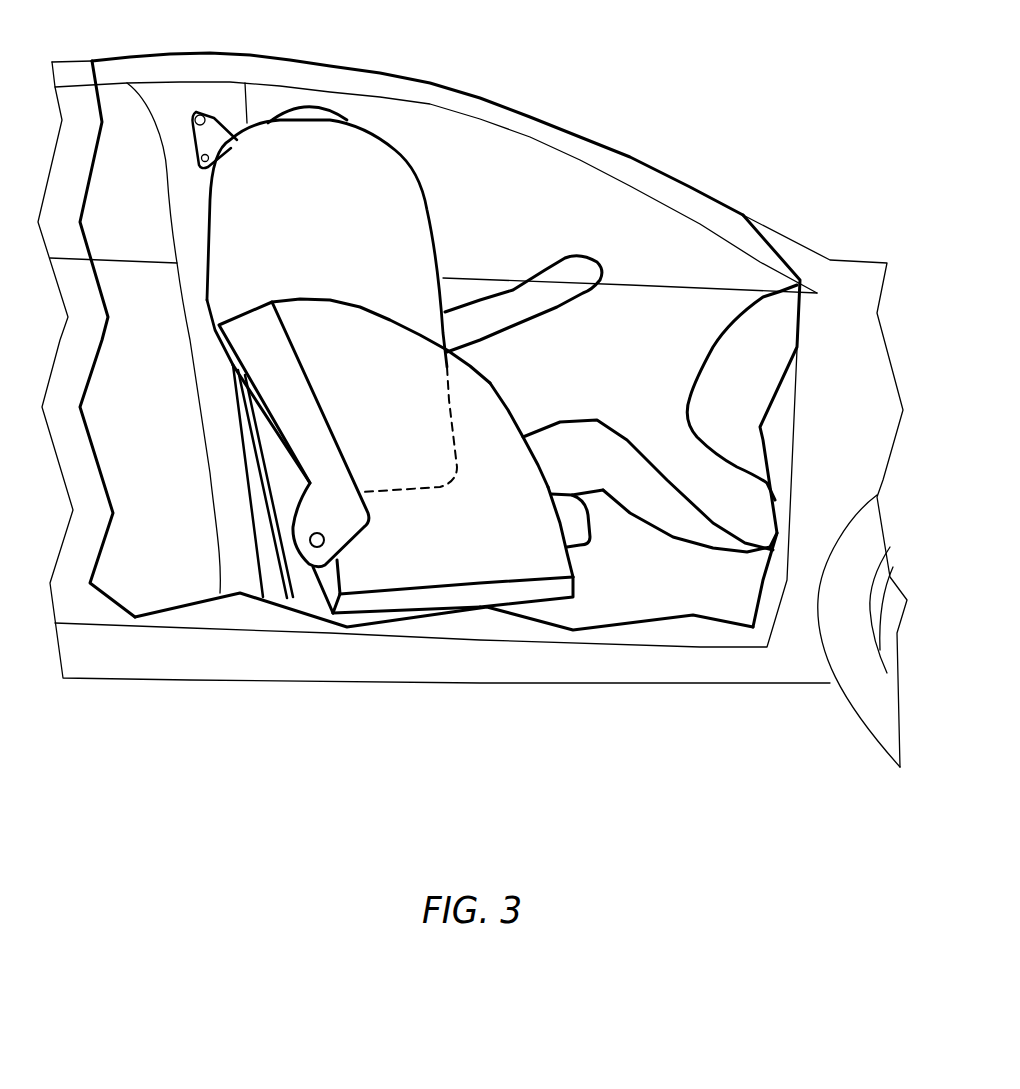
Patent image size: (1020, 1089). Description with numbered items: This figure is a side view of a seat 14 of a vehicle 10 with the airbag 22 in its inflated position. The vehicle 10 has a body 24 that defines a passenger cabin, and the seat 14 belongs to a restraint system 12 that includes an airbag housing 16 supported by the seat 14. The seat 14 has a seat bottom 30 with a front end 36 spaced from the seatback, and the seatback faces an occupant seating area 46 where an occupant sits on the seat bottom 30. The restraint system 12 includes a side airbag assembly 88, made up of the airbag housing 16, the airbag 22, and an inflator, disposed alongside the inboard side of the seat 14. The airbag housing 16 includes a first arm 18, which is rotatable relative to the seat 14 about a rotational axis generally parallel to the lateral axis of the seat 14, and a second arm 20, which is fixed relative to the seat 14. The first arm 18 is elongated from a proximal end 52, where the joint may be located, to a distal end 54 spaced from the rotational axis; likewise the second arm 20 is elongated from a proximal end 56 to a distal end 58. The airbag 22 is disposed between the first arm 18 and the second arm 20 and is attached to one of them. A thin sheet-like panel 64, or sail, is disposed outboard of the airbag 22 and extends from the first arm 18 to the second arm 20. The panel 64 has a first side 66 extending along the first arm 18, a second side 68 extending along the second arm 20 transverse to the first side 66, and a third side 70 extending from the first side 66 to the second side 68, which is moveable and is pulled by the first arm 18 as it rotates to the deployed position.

The vehicle 10 is at (697, 80).
The restraint system 12 is at (463, 140).
The seat 14 is at (268, 445).
The airbag housing 16 is at (310, 483).
The first arm 18 is at (242, 380).
The second arm 20 is at (550, 593).
The airbag 22 is at (433, 213).
The body 24 is at (793, 240).
The seat bottom 30 is at (582, 547).
The front end 36 is at (593, 523).
The occupant seating area 46 is at (477, 253).
The proximal end 52 is at (340, 557).
The distal end 54 is at (250, 307).
The proximal end 56 is at (327, 593).
The distal end 58 is at (577, 588).
The panel 64 is at (497, 380).
The first side 66 is at (325, 415).
The second side 68 is at (500, 577).
The third side 70 is at (510, 413).
The side airbag assembly 88 is at (287, 457).